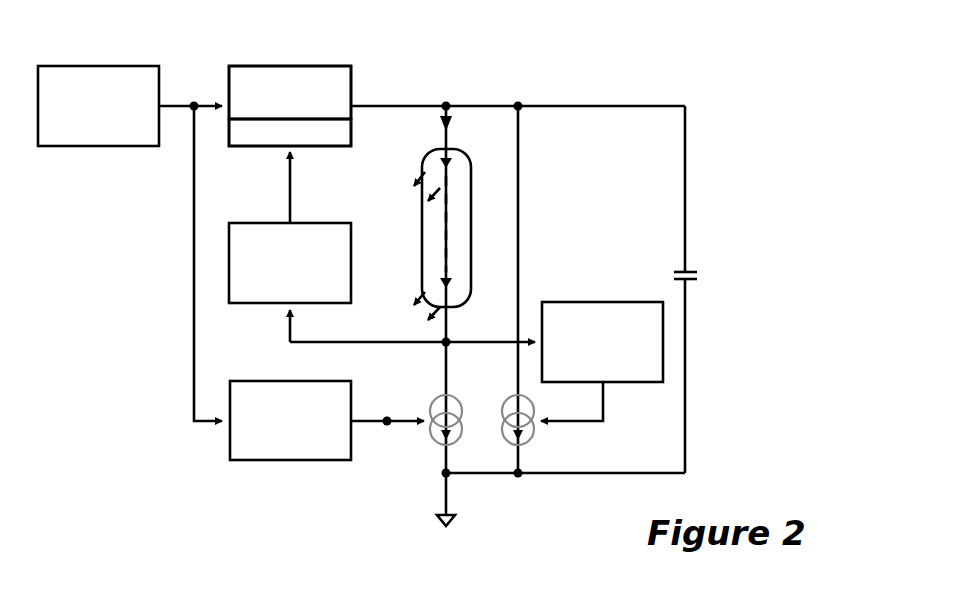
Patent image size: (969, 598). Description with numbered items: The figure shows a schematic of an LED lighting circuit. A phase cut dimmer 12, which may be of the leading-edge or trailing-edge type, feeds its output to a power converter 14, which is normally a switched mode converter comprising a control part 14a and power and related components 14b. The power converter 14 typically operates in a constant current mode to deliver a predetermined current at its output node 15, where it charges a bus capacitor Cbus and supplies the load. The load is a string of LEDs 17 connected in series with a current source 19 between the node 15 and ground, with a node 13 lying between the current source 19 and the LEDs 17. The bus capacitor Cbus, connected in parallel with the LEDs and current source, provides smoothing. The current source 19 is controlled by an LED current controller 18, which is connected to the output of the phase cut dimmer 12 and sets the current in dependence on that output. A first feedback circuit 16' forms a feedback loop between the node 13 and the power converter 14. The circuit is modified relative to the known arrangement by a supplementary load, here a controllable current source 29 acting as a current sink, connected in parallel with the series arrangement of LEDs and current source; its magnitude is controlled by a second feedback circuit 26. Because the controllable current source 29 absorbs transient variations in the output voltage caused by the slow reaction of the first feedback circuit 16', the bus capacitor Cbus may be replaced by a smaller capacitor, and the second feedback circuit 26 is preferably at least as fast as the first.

The phase cut dimmer 12 is at (98, 106).
The power converter 14 is at (286, 66).
The control part 14a is at (290, 133).
The power and related components 14b is at (290, 92).
The node 15 is at (518, 106).
The first feedback circuit 16' is at (290, 247).
The LEDs 17 is at (418, 157).
The LED current controller 18 is at (327, 420).
The node 13 is at (440, 343).
The second feedback circuit 26 is at (602, 361).
The current source 19 is at (433, 438).
The controllable current source 29 is at (542, 437).
The bus capacitor Cbus is at (700, 273).